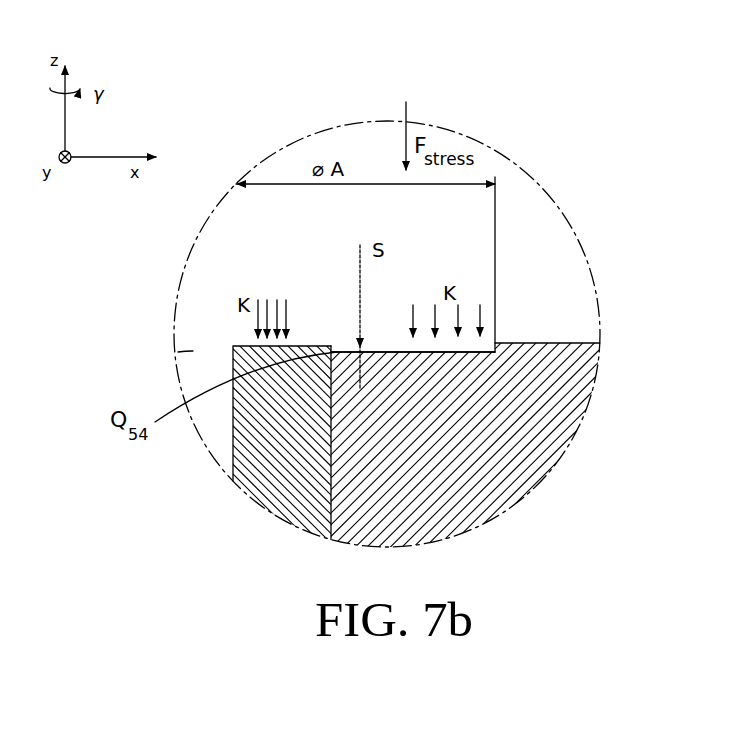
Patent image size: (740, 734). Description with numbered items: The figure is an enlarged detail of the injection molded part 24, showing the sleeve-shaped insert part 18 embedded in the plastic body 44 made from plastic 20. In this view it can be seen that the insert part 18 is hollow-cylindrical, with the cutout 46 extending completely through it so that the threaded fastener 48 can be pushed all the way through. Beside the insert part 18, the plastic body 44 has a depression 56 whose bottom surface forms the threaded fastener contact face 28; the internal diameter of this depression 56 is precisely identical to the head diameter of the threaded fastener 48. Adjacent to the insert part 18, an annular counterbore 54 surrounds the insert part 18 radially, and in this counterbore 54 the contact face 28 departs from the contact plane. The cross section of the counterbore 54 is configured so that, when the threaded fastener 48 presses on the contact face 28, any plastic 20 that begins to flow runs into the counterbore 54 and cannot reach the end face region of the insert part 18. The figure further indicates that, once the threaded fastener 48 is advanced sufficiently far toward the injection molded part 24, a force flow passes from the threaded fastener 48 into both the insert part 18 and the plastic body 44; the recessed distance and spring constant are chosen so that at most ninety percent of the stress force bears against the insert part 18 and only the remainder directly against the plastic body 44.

The insert part 18 is at (231, 343).
The plastic 20 is at (500, 490).
The injection molded part 24 is at (604, 169).
The threaded fastener contact face 28 is at (469, 351).
The plastic body 44 is at (551, 432).
The cutout 46 is at (178, 352).
The threaded fastener 48 is at (473, 222).
The counterbore 54 is at (343, 350).
The depression 56 is at (497, 342).